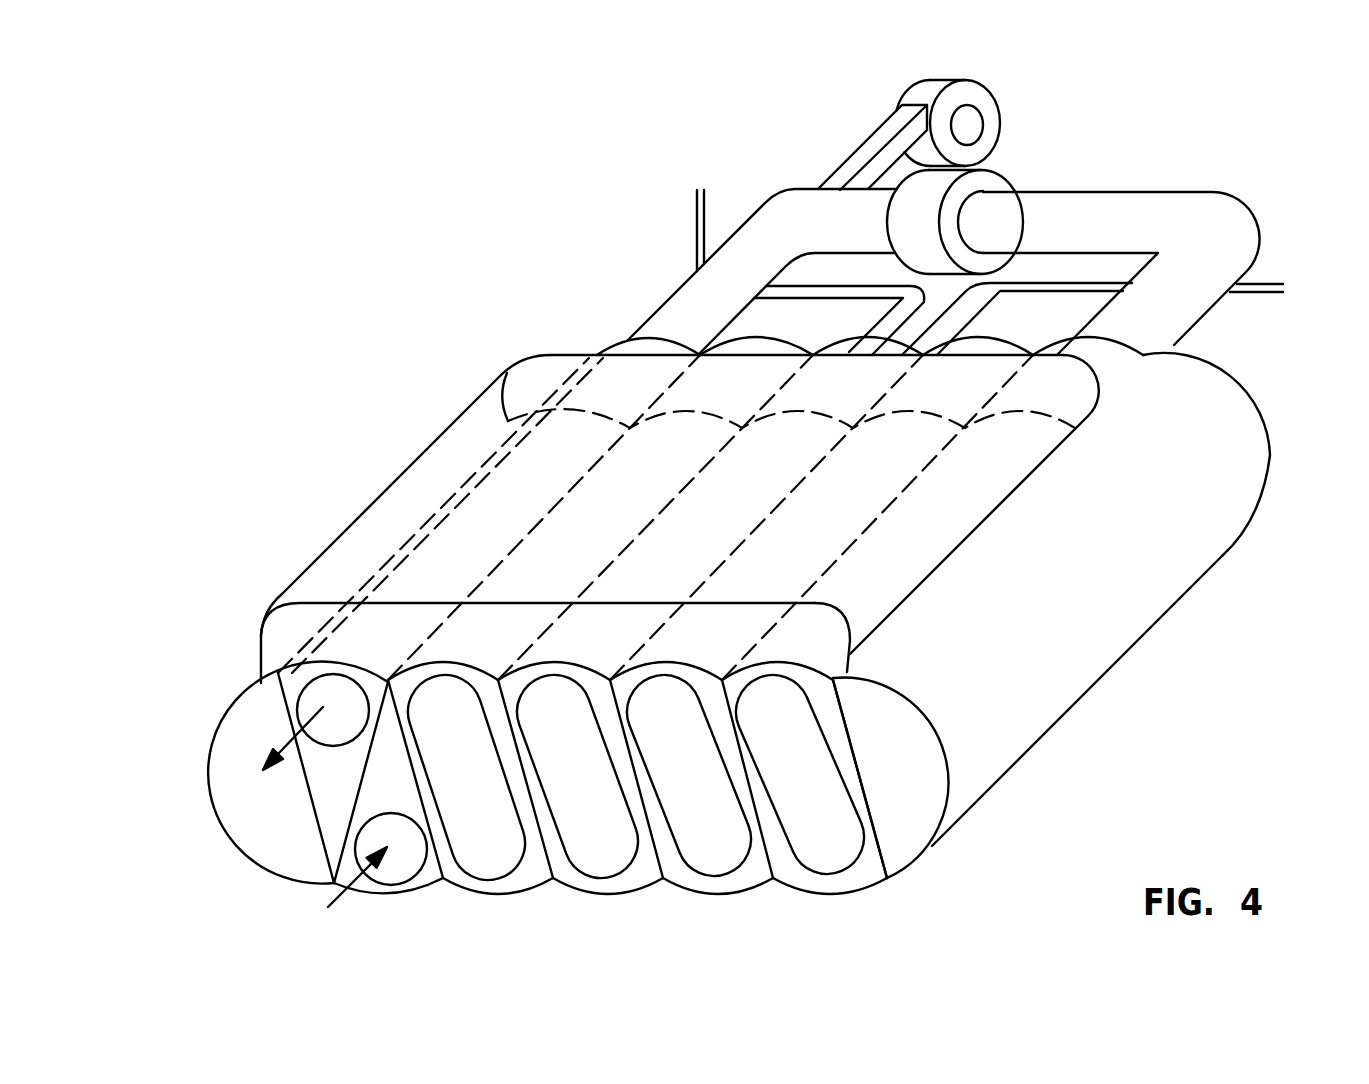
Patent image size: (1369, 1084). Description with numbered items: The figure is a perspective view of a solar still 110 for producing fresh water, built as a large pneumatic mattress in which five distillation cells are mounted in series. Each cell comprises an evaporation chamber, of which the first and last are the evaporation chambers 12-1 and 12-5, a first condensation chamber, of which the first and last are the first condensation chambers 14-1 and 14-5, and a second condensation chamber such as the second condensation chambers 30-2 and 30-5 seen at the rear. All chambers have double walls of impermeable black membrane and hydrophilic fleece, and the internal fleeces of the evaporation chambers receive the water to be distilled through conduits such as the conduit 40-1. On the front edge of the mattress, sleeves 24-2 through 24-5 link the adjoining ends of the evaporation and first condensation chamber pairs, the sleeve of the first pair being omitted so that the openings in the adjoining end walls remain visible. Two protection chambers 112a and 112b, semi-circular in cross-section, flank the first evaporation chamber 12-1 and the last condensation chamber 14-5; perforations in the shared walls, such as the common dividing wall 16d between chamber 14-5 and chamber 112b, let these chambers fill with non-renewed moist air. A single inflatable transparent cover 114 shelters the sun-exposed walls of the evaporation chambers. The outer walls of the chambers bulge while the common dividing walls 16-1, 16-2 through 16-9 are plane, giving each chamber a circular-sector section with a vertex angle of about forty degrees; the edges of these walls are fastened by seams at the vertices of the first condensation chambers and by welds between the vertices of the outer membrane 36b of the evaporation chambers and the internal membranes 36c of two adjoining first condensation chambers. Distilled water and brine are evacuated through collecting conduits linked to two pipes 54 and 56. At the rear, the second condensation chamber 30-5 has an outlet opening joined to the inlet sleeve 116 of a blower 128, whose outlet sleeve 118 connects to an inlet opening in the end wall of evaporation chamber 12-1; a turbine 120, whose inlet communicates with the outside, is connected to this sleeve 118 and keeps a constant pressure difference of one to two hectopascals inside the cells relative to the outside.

The solar still 110 is at (281, 249).
The inflatable transparent cover 114 is at (385, 497).
The protection chamber 112a is at (257, 860).
The protection chamber 112b is at (1051, 615).
The evaporation chamber 12-1 is at (245, 823).
The evaporation chamber 12-5 is at (976, 818).
The first condensation chamber 14-1 is at (420, 881).
The first condensation chamber 14-5 is at (862, 878).
The common dividing wall 16-1 is at (370, 766).
The common dividing wall 16-2 is at (425, 797).
The common dividing wall 16-9 is at (828, 711).
The common dividing wall 16d is at (852, 734).
The sleeve 24-2 is at (503, 793).
The sleeve 24-5 is at (721, 793).
The second condensation chamber 30-2 is at (747, 350).
The second condensation chamber 30-5 is at (1115, 366).
The outer membrane 36b is at (370, 745).
The internal membrane 36c is at (430, 887).
The conduit 40-1 is at (337, 668).
The pipe 54 is at (802, 288).
The pipe 56 is at (1070, 283).
The inlet sleeve 116 is at (1098, 232).
The outlet sleeve 118 is at (852, 232).
The turbine 120 is at (1000, 111).
The blower 128 is at (995, 183).